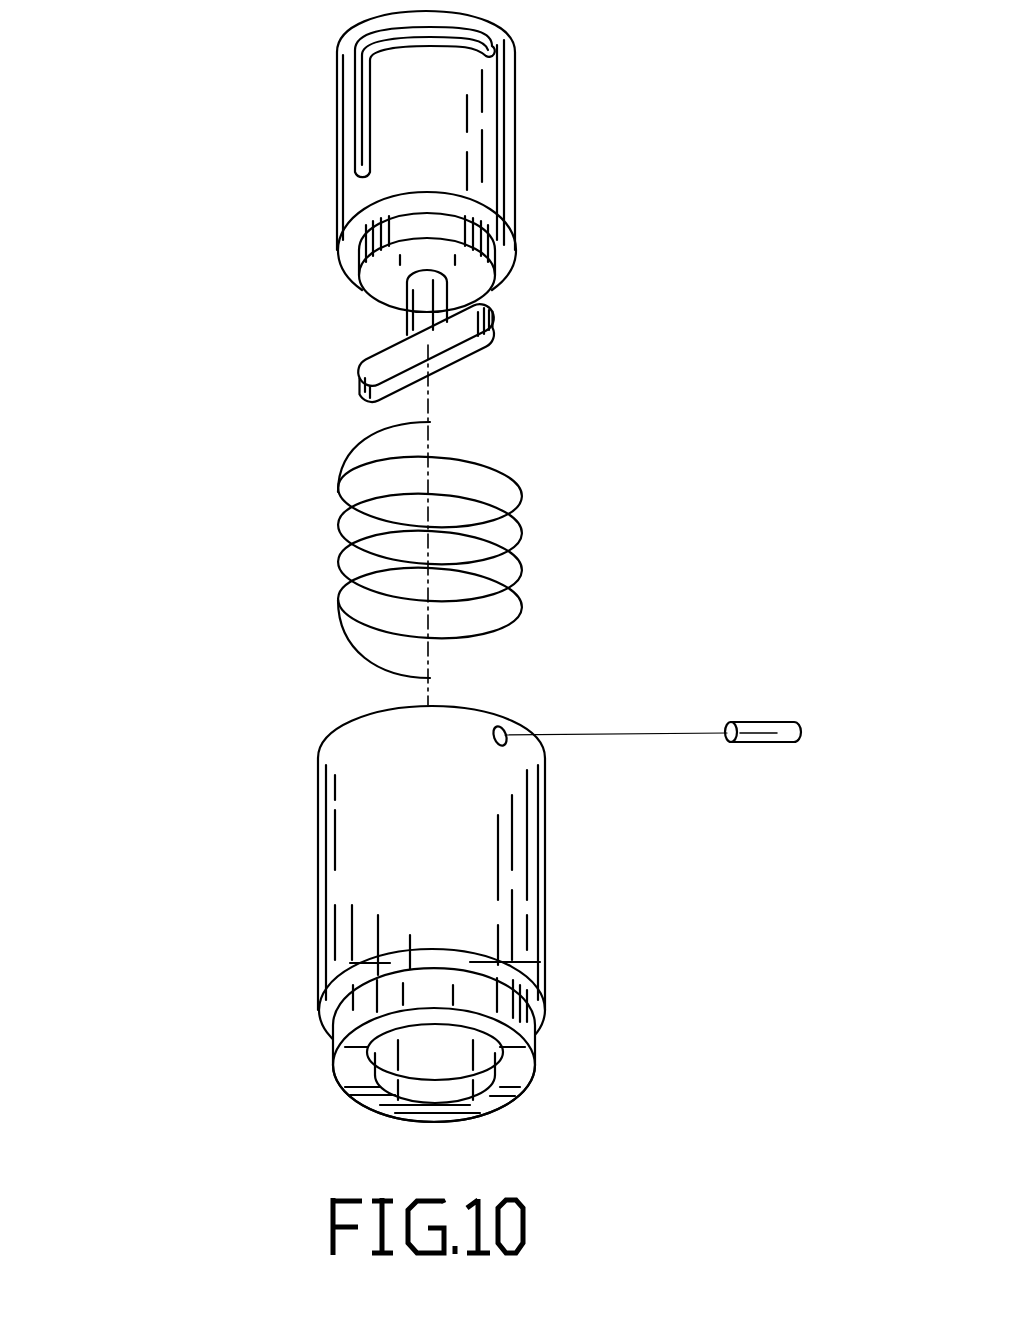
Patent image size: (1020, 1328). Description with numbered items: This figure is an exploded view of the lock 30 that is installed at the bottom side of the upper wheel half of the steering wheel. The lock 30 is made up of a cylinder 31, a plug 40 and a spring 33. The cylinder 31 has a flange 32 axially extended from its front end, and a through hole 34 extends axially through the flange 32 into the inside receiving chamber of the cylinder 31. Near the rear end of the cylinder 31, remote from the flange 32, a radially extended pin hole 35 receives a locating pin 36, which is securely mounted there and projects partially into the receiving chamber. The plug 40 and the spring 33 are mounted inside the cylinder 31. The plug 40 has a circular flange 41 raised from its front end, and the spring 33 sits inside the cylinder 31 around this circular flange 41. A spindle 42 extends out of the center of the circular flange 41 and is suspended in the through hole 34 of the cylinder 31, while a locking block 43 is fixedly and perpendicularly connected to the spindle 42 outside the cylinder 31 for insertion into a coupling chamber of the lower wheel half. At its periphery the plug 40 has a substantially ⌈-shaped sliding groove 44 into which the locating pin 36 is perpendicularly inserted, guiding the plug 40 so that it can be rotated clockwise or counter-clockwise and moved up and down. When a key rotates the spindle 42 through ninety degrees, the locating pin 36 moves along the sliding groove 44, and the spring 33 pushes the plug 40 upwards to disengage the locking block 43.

The lock 30 is at (590, 452).
The cylinder 31 is at (360, 874).
The flange 32 is at (460, 992).
The spring 33 is at (450, 582).
The through hole 34 is at (410, 1065).
The pin hole 35 is at (505, 740).
The locating pin 36 is at (764, 733).
The plug 40 is at (337, 205).
The circular flange 41 is at (477, 250).
The spindle 42 is at (422, 296).
The locking block 43 is at (470, 343).
The sliding groove 44 is at (489, 41).